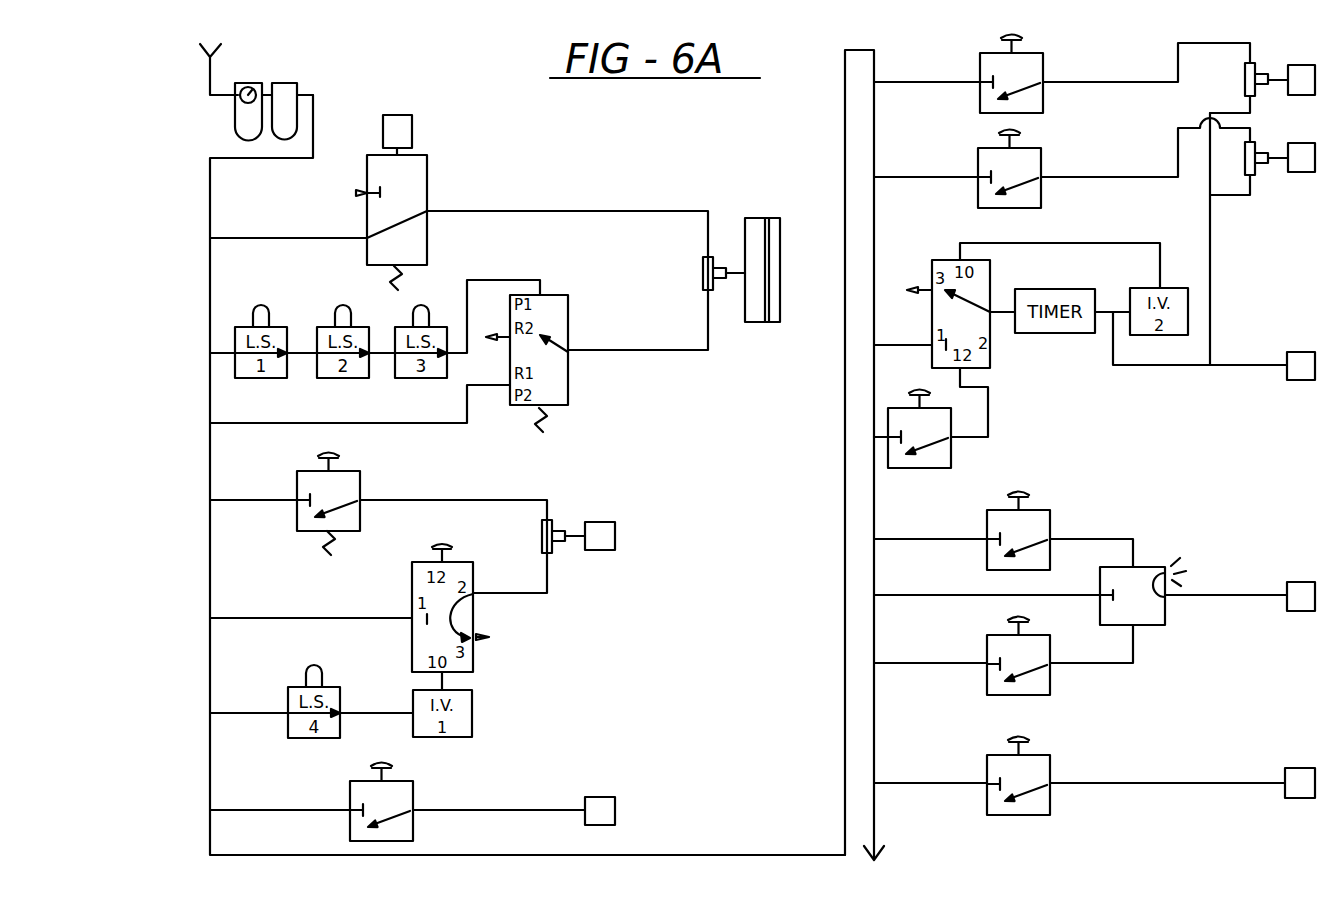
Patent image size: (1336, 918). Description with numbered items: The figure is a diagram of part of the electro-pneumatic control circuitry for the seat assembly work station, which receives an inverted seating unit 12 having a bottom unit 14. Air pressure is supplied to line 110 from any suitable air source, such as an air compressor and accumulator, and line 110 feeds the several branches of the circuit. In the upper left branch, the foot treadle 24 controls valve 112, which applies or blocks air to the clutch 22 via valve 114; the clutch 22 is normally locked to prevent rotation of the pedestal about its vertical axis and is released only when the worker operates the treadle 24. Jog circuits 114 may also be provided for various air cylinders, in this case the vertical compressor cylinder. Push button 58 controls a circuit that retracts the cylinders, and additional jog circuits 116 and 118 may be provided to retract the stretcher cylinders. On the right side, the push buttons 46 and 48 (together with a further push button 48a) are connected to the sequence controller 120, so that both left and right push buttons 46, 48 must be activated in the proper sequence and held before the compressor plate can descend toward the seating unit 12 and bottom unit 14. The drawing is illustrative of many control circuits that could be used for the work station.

The line 110 is at (210, 80).
The valve 112 is at (367, 210).
The foot treadle 24 is at (414, 132).
The clutch 22 is at (760, 218).
The valve 114 is at (703, 283).
The seating unit 12 is at (950, 575).
The bottom unit 14 is at (950, 445).
The push button 58 is at (378, 776).
The jog circuit 116 is at (1106, 82).
The jog circuit 118 is at (1097, 177).
The push button 46 is at (1022, 497).
The push button 48 is at (1006, 623).
The valve 48a is at (1010, 745).
The sequence controller 120 is at (1156, 627).